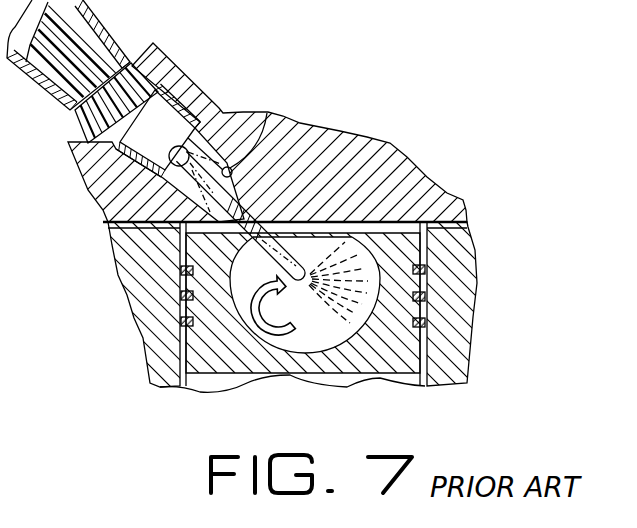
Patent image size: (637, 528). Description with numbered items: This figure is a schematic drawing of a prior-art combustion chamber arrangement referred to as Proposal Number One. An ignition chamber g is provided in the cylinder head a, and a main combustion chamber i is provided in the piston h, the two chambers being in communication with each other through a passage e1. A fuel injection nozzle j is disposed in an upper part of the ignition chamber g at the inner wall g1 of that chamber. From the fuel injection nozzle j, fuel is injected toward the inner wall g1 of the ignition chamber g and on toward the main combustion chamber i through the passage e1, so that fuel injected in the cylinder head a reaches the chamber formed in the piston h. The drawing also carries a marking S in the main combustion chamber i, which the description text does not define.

The cylinder head a is at (417, 185).
The fuel injection nozzle j is at (210, 93).
The ignition chamber g is at (112, 222).
The inner wall g1 is at (267, 114).
The passage e1 is at (242, 236).
The main combustion chamber i is at (331, 335).
The swirl S is at (275, 331).
The piston h is at (381, 362).